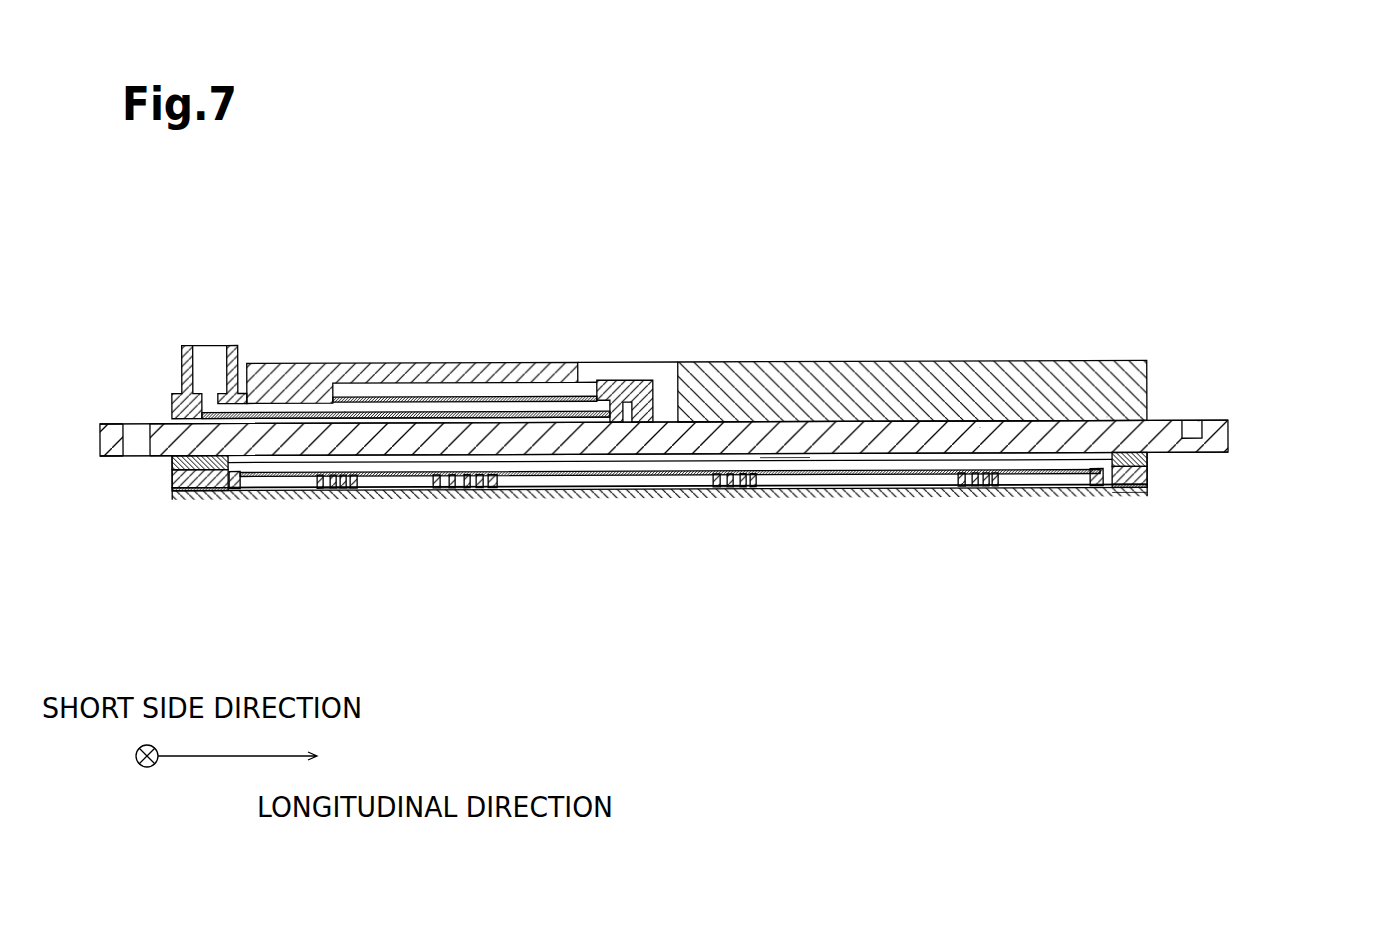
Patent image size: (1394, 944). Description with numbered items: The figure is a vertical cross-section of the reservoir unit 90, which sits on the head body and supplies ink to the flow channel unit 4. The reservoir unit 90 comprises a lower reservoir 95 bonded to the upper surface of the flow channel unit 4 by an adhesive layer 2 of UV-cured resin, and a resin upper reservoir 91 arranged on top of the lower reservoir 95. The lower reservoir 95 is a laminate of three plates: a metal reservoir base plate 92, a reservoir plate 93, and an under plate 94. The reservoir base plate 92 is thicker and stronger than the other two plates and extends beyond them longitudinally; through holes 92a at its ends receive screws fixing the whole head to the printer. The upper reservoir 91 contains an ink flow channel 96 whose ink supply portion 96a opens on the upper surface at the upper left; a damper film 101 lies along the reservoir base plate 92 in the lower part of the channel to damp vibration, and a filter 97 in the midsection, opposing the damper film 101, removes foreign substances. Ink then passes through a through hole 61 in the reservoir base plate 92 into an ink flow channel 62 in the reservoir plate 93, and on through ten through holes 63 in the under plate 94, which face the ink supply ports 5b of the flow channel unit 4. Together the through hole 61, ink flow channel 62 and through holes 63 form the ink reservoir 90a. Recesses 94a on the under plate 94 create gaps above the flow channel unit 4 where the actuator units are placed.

The adhesive layer 2 is at (1153, 493).
The flow channel unit 4 is at (1137, 496).
The ink supply ports 5b is at (1110, 490).
The through hole 61 is at (657, 430).
The ink flow channel 62 is at (817, 470).
The through holes 63 is at (207, 505).
The reservoir unit 90 is at (1327, 342).
The ink reservoir 90a is at (783, 456).
The upper reservoir 91 is at (1147, 367).
The reservoir base plate 92 is at (1213, 438).
The through holes 92a is at (1196, 442).
The reservoir plate 93 is at (1147, 463).
The under plate 94 is at (1147, 488).
The recesses 94a is at (367, 480).
The lower reservoir 95 is at (1282, 398).
The ink flow channel 96 is at (412, 412).
The ink supply portion 96a is at (198, 363).
The filter 97 is at (500, 398).
The damper film 101 is at (553, 420).